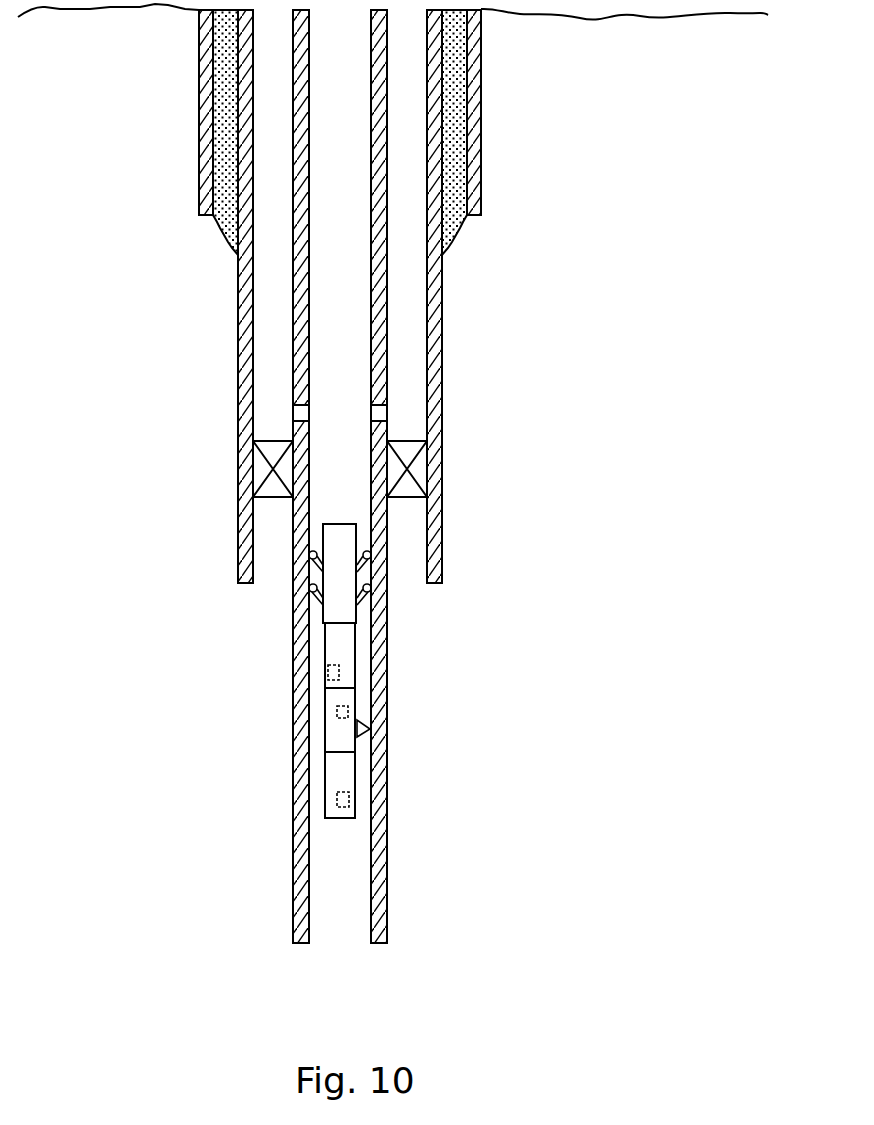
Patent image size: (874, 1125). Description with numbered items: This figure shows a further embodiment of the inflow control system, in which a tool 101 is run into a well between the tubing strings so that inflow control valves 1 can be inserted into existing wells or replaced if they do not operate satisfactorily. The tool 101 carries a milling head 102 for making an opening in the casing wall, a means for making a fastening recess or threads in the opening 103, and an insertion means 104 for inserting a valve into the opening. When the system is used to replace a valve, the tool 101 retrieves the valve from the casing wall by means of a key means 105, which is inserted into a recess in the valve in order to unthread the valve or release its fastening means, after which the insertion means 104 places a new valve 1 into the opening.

The inflow control valve 1 is at (349, 800).
The tool 101 is at (425, 658).
The milling head 102 is at (358, 729).
The means for making a fastening recess or threads 103 is at (348, 710).
The insertion means 104 is at (348, 780).
The key means 105 is at (330, 672).